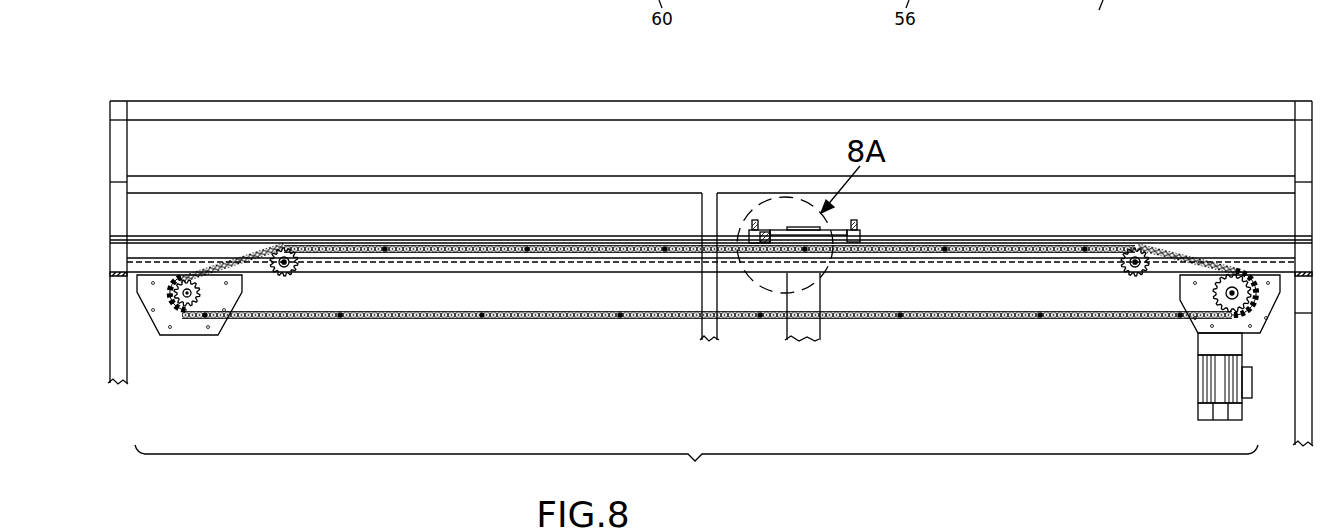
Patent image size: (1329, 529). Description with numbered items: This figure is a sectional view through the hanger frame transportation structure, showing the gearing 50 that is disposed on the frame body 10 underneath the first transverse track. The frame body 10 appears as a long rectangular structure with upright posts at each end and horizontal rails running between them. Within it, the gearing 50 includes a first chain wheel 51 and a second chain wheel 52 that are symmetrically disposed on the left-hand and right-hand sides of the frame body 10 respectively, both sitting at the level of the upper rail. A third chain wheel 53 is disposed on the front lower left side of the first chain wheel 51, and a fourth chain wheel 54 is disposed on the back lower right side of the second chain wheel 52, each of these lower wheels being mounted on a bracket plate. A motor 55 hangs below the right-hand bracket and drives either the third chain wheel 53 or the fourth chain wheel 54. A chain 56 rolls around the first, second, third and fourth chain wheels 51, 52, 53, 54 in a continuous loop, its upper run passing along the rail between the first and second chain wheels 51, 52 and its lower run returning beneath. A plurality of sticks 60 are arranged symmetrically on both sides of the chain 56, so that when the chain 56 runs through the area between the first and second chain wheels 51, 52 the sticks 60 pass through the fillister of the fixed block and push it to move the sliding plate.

The frame body 10 is at (186, 82).
The gearing 50 is at (696, 467).
The first chain wheel 51 is at (288, 272).
The second chain wheel 52 is at (1126, 269).
The third chain wheel 53 is at (190, 301).
The fourth chain wheel 54 is at (1197, 308).
The motor 55 is at (1197, 393).
The chain 56 is at (437, 321).
The sticks 60 is at (665, 246).